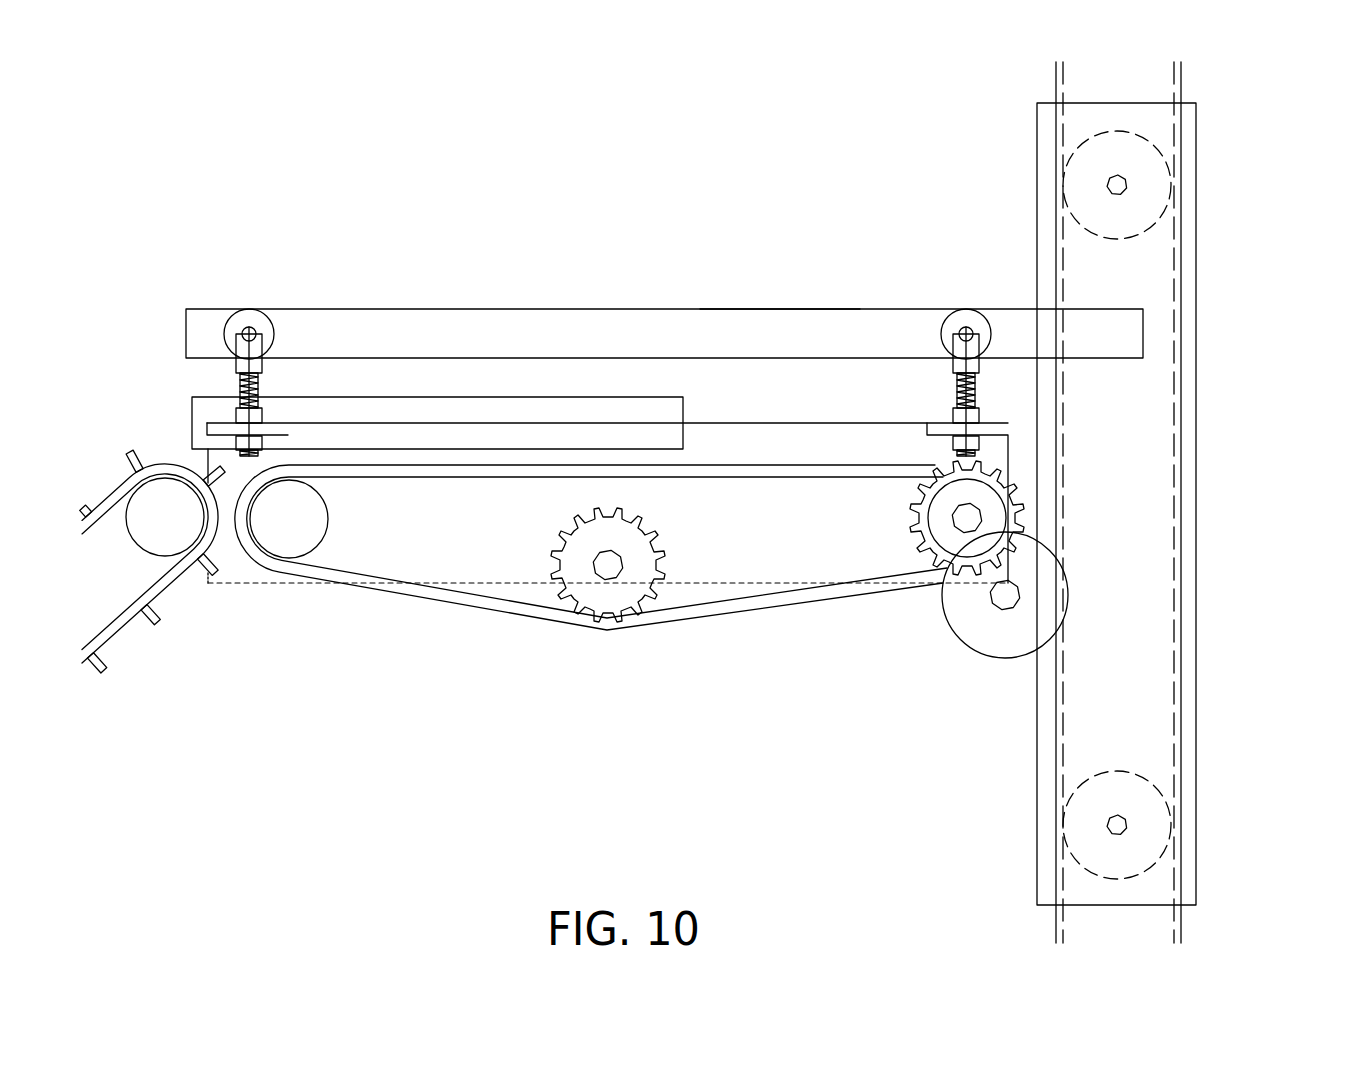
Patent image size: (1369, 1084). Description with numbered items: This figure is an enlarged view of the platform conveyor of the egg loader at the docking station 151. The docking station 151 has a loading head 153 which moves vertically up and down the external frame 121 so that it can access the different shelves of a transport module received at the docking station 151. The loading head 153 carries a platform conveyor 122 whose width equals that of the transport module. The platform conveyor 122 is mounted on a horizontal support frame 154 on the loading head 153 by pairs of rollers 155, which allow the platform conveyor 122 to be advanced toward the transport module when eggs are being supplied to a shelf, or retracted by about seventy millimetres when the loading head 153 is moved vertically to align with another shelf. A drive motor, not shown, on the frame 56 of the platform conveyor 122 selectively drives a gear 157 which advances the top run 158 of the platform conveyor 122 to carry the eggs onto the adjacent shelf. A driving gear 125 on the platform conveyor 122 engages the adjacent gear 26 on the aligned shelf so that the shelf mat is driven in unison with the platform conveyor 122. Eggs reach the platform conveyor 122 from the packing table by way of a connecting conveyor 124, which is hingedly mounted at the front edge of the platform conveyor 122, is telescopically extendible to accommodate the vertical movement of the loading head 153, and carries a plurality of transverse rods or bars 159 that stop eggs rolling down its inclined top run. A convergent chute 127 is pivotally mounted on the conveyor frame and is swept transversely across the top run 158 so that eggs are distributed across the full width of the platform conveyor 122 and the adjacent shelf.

The gear 26 is at (910, 632).
The frame 56 is at (260, 572).
The external frame 121 is at (1185, 90).
The platform conveyor 122 is at (510, 635).
The connecting conveyor 124 is at (120, 639).
The driving gear 125 is at (892, 520).
The convergent chute 127 is at (702, 404).
The docking station 151 is at (1013, 160).
The loading head 153 is at (775, 300).
The horizontal support frame 154 is at (567, 342).
The rollers 155 is at (257, 322).
The gear 157 is at (612, 594).
The top run 158 is at (543, 467).
The transverse rods or bars 159 is at (128, 452).